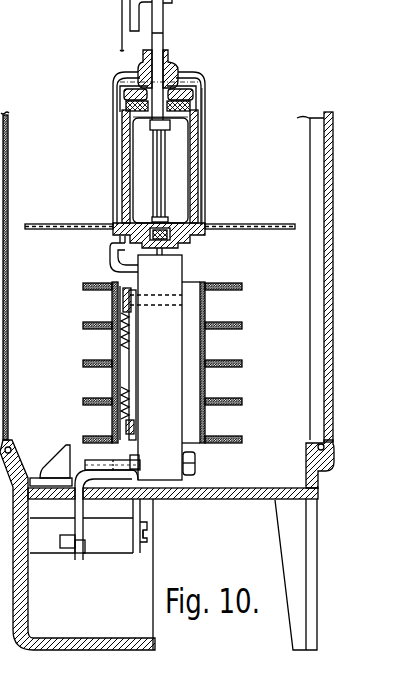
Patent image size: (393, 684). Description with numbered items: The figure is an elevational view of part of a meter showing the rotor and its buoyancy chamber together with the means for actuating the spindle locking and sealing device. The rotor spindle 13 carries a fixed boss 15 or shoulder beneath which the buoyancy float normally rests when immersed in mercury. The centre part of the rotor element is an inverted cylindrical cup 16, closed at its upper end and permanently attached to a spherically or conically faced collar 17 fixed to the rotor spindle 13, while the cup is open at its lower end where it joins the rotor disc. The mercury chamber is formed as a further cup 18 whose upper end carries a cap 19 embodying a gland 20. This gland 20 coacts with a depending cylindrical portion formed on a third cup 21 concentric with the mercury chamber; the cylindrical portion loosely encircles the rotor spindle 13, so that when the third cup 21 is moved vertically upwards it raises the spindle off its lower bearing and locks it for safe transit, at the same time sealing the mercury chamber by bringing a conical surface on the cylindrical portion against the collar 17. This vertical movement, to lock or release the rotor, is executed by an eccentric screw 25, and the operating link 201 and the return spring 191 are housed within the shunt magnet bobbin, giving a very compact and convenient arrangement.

The rotor spindle 13 is at (158, 38).
The fixed boss 15 is at (166, 124).
The inverted cylindrical cup 16 is at (206, 90).
The spherically or conically faced collar 17 is at (172, 70).
The further cup 18 is at (199, 153).
The cap 19 is at (126, 93).
The gland 20 is at (128, 106).
The third cup 21 is at (127, 86).
The return spring 191 is at (122, 320).
The operating link 201 is at (140, 351).
The eccentric screw 25 is at (147, 531).